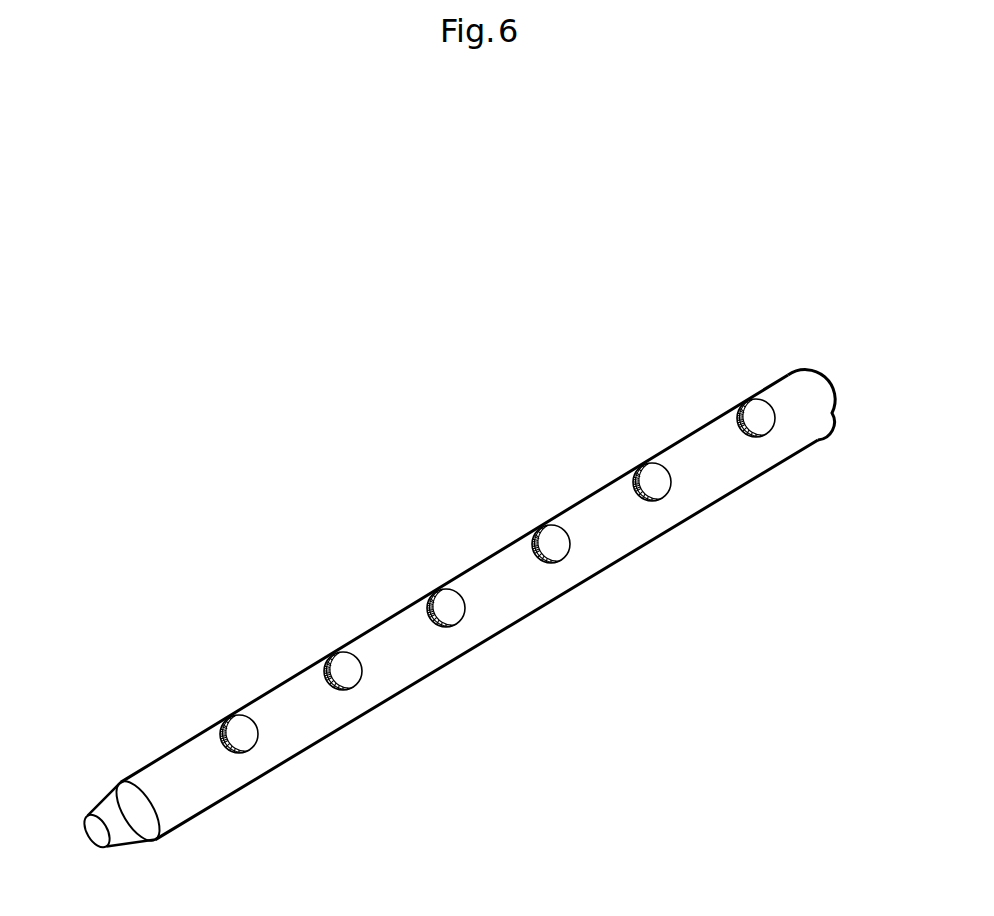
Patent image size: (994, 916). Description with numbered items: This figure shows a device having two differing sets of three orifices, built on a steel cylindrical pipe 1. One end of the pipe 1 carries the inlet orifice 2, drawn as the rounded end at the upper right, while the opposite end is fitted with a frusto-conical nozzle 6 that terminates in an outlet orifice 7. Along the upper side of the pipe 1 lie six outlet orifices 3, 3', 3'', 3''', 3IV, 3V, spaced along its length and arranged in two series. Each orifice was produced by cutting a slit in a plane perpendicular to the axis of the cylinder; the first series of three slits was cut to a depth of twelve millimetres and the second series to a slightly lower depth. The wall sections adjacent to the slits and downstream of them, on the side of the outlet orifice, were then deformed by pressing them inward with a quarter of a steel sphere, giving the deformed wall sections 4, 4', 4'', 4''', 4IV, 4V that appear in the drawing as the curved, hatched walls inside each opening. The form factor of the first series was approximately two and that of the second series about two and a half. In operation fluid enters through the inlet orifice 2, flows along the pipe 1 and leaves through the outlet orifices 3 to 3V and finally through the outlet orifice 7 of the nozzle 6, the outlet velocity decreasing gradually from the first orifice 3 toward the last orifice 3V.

The cylindrical pipe 1 is at (798, 442).
The inlet orifice 2 is at (828, 383).
The outlet orifice 3 is at (746, 385).
The outlet orifice 3' is at (643, 449).
The outlet orifice 3'' is at (541, 511).
The outlet orifice 3''' is at (436, 575).
The outlet orifice 3IV is at (341, 656).
The outlet orifice 3V is at (237, 718).
The deformed wall section 4 is at (754, 468).
The deformed wall section 4' is at (648, 532).
The deformed wall section 4'' is at (550, 593).
The deformed wall section 4''' is at (445, 658).
The deformed wall section 4IV is at (330, 687).
The deformed wall section 4V is at (222, 750).
The nozzle 6 is at (137, 838).
The outlet orifice 7 is at (95, 836).